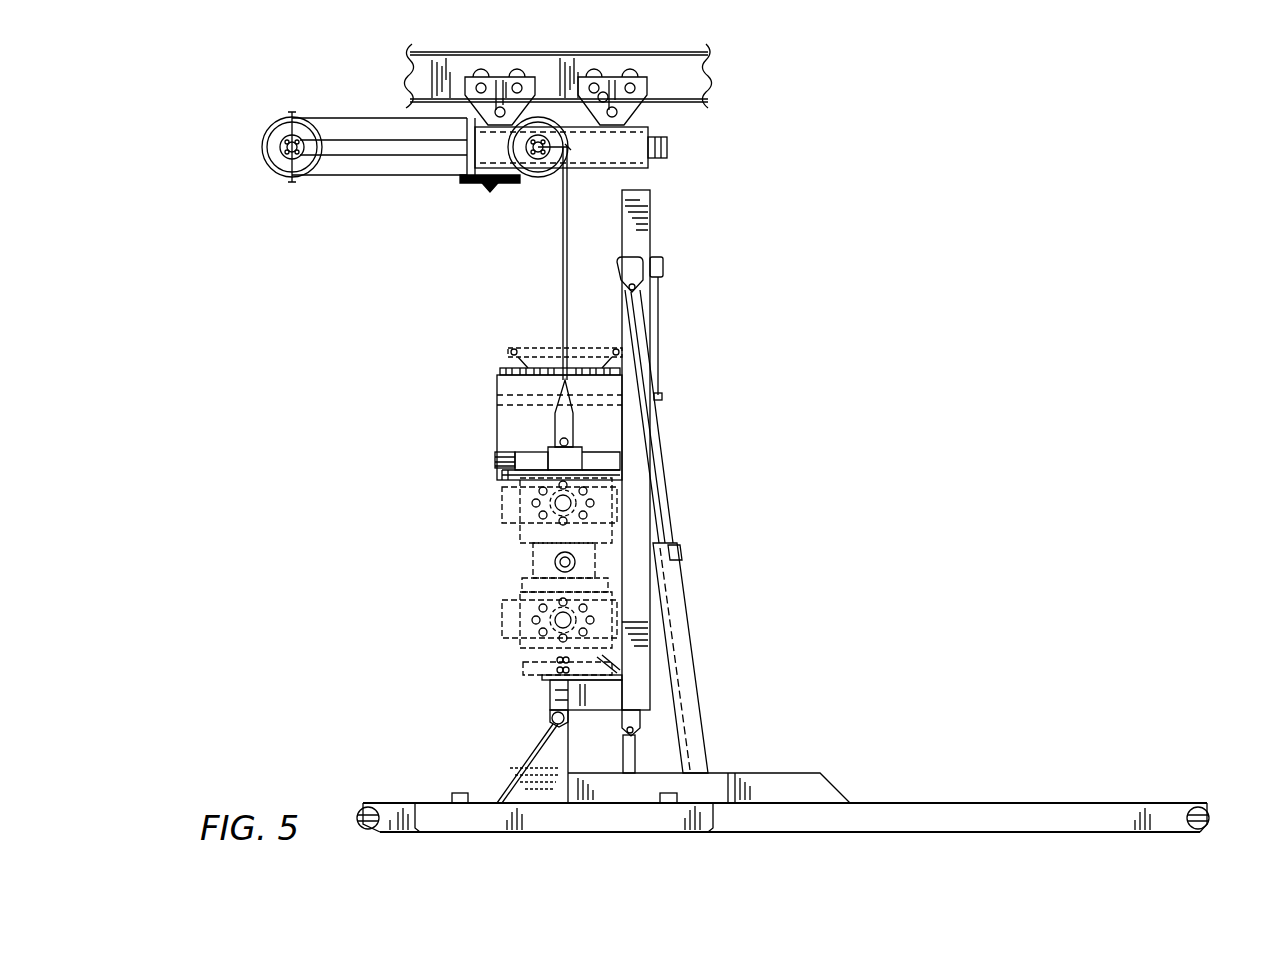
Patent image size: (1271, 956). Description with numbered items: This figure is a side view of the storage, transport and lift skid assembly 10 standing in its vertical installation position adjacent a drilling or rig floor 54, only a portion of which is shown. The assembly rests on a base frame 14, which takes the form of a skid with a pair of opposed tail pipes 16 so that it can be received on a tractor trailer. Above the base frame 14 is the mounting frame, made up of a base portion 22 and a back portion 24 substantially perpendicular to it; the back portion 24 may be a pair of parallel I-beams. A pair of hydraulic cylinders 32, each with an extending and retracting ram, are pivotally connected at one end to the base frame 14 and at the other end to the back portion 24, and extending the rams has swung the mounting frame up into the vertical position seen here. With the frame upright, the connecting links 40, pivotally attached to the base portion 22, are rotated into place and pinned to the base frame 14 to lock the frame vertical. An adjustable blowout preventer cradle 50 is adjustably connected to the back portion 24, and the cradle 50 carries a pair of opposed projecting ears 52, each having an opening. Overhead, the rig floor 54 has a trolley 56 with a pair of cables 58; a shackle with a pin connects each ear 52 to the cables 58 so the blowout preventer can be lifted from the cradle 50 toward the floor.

The storage, transport and lift skid assembly 10 is at (908, 372).
The base frame 14 is at (988, 815).
The tail pipes 16 is at (362, 812).
The base portion 22 is at (575, 698).
The back portion 24 is at (640, 247).
The hydraulic cylinders 32 is at (673, 583).
The connecting links 40 is at (632, 762).
The adjustable blowout preventer cradle 50 is at (495, 463).
The projecting ears 52 is at (553, 452).
The drilling or rig floor 54 is at (688, 78).
The trolley 56 is at (640, 145).
The cables 58 is at (562, 258).